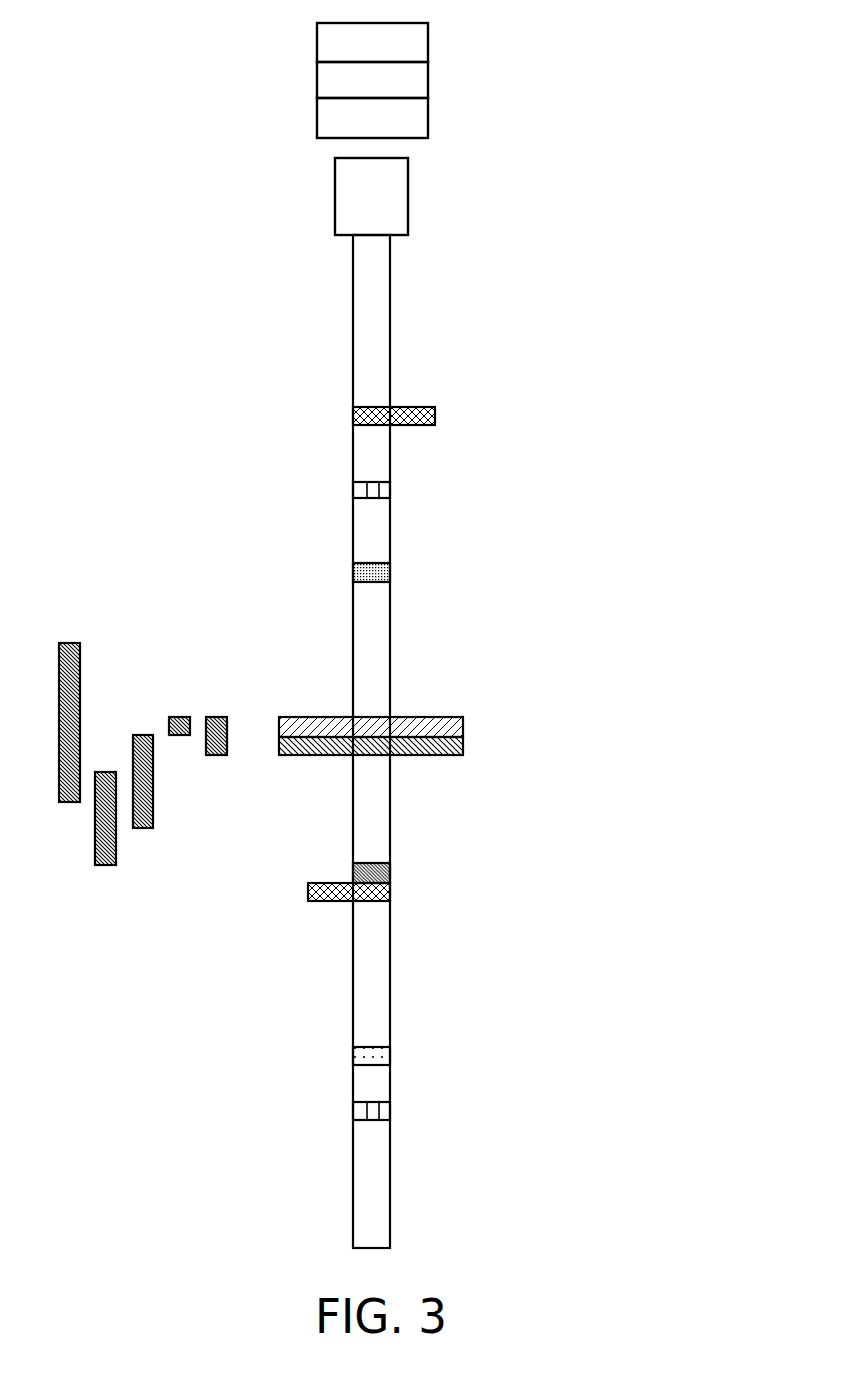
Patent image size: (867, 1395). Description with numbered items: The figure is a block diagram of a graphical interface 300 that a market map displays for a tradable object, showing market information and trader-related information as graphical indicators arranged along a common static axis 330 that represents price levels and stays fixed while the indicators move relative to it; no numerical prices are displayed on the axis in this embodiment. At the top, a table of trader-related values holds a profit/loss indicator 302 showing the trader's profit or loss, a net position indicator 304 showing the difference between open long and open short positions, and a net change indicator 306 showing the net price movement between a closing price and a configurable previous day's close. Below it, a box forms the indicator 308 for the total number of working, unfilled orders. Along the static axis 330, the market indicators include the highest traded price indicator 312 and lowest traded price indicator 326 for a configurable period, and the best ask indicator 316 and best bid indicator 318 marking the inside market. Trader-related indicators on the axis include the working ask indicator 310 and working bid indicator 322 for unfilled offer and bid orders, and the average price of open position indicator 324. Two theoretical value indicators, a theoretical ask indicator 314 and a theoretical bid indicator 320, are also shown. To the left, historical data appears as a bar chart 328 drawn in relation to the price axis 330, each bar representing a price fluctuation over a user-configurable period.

The graphical interface 300 is at (650, 180).
The profit/loss indicator 302 is at (428, 42).
The net position indicator 304 is at (428, 78).
The net change indicator 306 is at (428, 120).
The total working orders indicator 308 is at (408, 203).
The working ask indicator 310 is at (435, 414).
The highest traded price indicator 312 is at (390, 487).
The theoretical ask indicator 314 is at (390, 569).
The best ask indicator 316 is at (463, 718).
The best bid indicator 318 is at (463, 750).
The theoretical bid indicator 320 is at (390, 867).
The working bid indicator 322 is at (390, 889).
The average price of open position indicator 324 is at (390, 1052).
The lowest traded price indicator 326 is at (390, 1108).
The bar chart 328 is at (136, 652).
The static axis 330 is at (390, 1208).